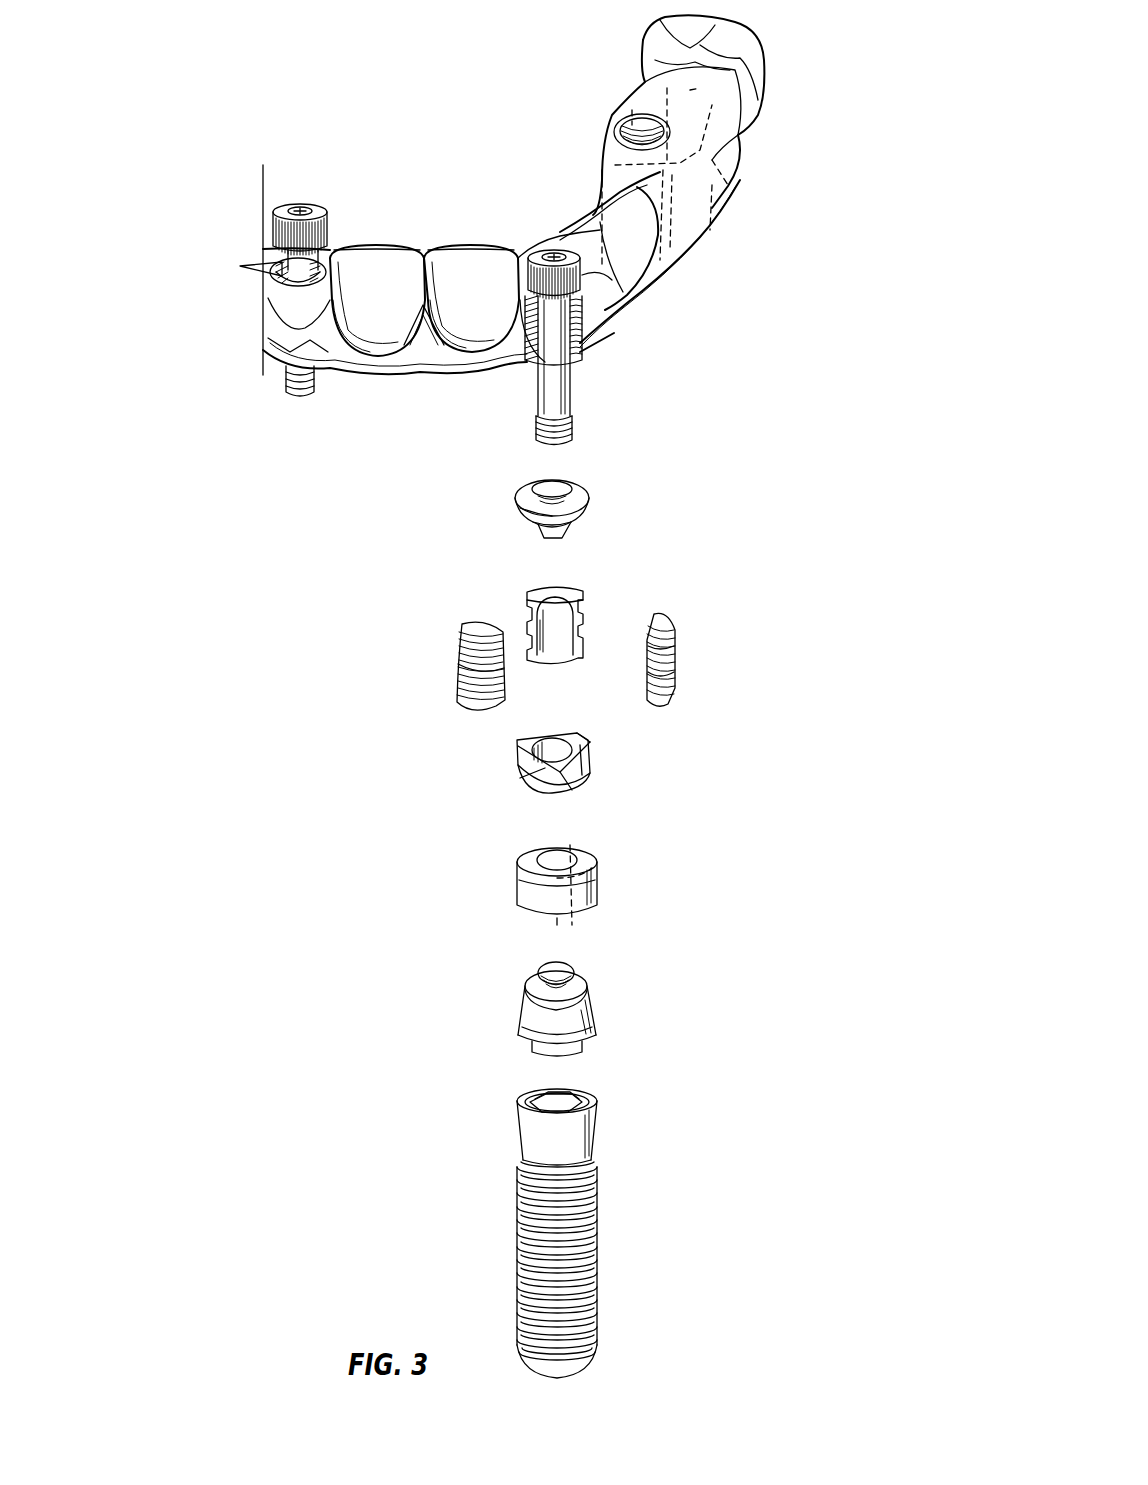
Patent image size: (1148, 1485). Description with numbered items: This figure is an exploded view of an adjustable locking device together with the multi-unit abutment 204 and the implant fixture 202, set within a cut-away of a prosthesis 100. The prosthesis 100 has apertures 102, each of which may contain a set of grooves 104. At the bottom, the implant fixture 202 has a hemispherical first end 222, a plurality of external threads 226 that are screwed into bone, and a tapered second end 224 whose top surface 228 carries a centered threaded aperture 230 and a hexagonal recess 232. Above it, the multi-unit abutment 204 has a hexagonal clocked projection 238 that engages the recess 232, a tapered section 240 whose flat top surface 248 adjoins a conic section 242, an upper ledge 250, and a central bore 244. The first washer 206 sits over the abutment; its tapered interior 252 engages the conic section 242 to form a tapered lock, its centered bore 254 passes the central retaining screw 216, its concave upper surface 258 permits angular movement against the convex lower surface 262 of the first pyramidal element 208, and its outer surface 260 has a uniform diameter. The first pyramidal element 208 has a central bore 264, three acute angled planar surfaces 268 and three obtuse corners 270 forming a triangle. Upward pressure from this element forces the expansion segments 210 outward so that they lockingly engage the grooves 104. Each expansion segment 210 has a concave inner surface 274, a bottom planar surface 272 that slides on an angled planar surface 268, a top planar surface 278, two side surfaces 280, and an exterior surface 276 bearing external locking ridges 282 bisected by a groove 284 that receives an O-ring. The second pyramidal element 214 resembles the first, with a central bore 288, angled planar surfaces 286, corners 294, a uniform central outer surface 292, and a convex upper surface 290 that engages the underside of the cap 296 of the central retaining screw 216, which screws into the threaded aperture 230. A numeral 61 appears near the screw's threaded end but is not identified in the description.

The prosthesis 100 is at (368, 400).
The apertures 102 is at (626, 118).
The grooves 104 is at (556, 358).
The threaded end of screw 61 is at (574, 431).
The central retaining screw 216 is at (548, 318).
The cap 296 is at (578, 265).
The second pyramidal element 214 is at (558, 519).
The central bore 288 is at (568, 490).
The upper surface 290 is at (522, 506).
The central outer surface 292 is at (589, 512).
The corners 294 is at (572, 532).
The angled planar surfaces 286 is at (546, 538).
The expansion segments 210 is at (563, 636).
The side surfaces 280 is at (527, 617).
The top planar surface 278 is at (578, 598).
The inner surface 274 is at (558, 628).
The exterior surface 276 is at (670, 611).
The external locking ridges 282 is at (676, 640).
The groove 284 is at (676, 668).
The bottom planar surface 272 is at (566, 661).
The first pyramidal element 208 is at (541, 768).
The central bore 264 is at (574, 750).
The angled planar surfaces 268 is at (532, 766).
The lower surface 262 is at (552, 796).
The corners 270 is at (580, 790).
The first washer 206 is at (542, 878).
The upper surface 258 is at (532, 863).
The bore 254 is at (567, 858).
The interior 252 is at (592, 873).
The outer surface 260 is at (592, 905).
The multi-unit abutment 204 is at (543, 1009).
The upper ledge 250 is at (547, 966).
The conic section 242 is at (532, 985).
The central bore 244 is at (574, 968).
The top surface 248 is at (592, 992).
The tapered section 240 is at (597, 1028).
The clocked projection 238 is at (546, 1054).
The implant fixture 202 is at (543, 1227).
The top surface 228 is at (582, 1093).
The recess 232 is at (528, 1106).
The threaded aperture 230 is at (592, 1108).
The second end 224 is at (591, 1135).
The external threads 226 is at (597, 1230).
The first end 222 is at (570, 1364).